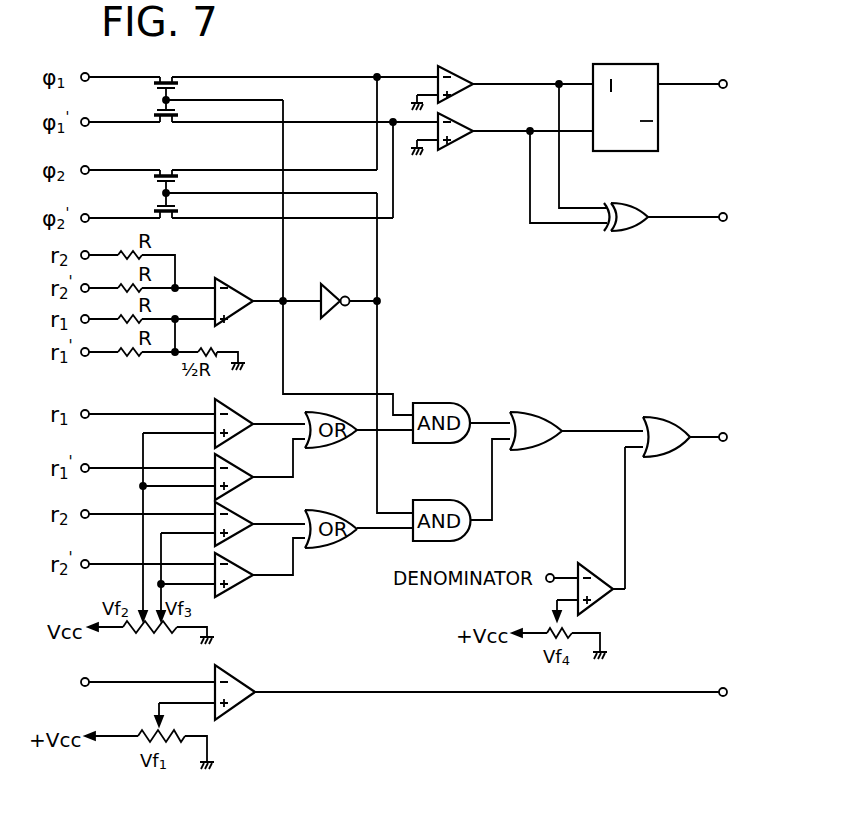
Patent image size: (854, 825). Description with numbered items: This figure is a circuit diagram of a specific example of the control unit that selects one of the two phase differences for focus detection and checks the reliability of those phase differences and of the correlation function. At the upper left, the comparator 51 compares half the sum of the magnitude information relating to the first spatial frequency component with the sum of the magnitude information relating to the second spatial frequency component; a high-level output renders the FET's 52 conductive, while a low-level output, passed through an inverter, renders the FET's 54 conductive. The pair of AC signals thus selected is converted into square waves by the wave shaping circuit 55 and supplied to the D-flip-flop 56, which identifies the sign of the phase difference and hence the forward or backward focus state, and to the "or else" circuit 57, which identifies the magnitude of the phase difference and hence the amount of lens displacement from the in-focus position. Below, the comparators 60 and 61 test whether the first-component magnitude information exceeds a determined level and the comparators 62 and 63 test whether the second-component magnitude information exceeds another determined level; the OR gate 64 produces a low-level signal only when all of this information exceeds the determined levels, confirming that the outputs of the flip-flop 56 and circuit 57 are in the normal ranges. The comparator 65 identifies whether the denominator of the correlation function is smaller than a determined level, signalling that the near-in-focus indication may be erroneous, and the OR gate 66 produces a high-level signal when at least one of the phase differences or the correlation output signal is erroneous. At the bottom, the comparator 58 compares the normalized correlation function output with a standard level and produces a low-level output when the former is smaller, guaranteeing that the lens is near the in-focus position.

The comparator 51 is at (238, 278).
The FET's 52 is at (192, 99).
The FET's 54 is at (139, 194).
The wave shaping circuit 55 is at (458, 95).
The D-flip-flop 56 is at (658, 118).
The "or else" circuit 57 is at (636, 228).
The comparator 58 is at (240, 706).
The comparator 60 is at (240, 436).
The comparator 61 is at (240, 489).
The comparator 62 is at (240, 536).
The comparator 63 is at (240, 587).
The OR gate 64 is at (530, 450).
The comparator 65 is at (591, 563).
The OR gate 66 is at (657, 417).